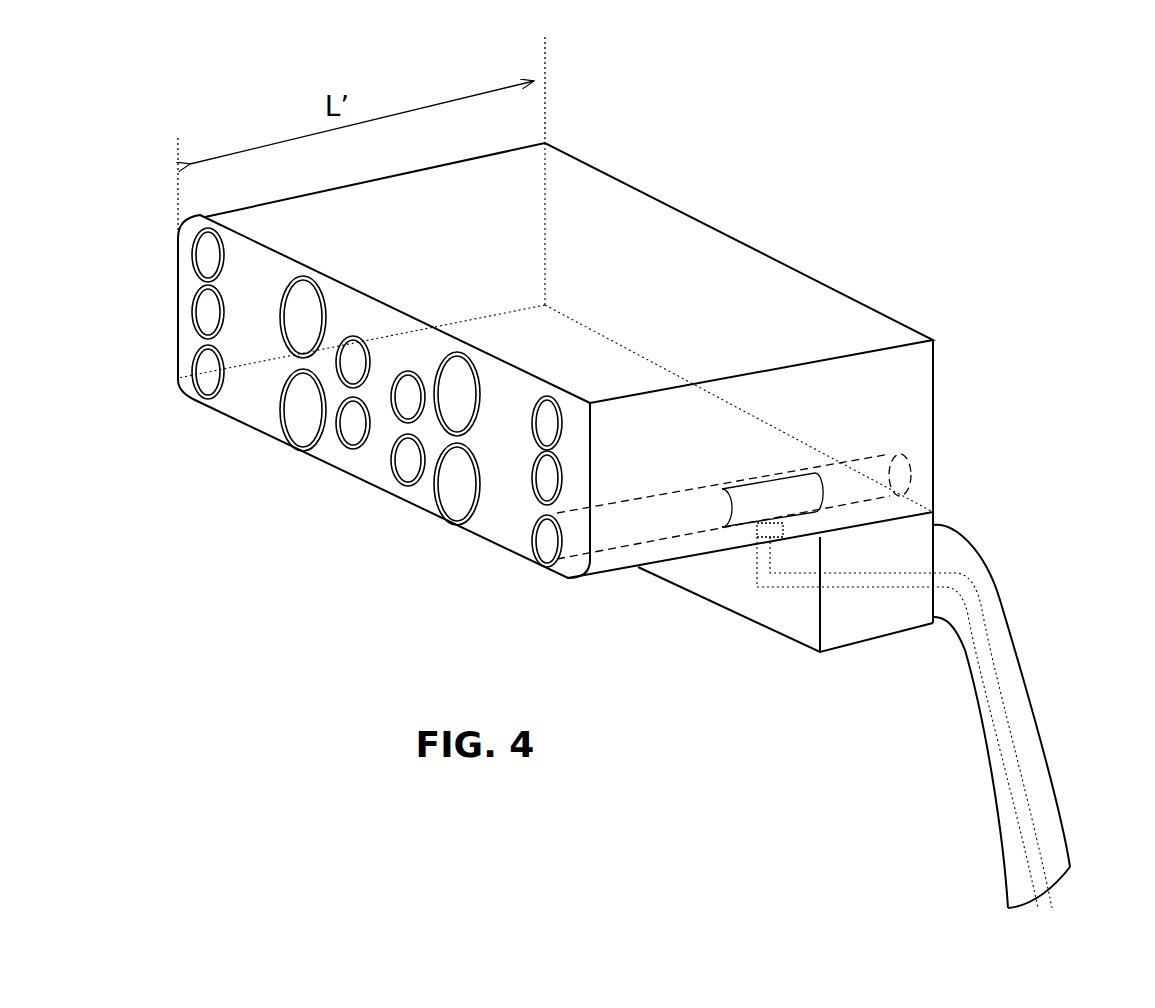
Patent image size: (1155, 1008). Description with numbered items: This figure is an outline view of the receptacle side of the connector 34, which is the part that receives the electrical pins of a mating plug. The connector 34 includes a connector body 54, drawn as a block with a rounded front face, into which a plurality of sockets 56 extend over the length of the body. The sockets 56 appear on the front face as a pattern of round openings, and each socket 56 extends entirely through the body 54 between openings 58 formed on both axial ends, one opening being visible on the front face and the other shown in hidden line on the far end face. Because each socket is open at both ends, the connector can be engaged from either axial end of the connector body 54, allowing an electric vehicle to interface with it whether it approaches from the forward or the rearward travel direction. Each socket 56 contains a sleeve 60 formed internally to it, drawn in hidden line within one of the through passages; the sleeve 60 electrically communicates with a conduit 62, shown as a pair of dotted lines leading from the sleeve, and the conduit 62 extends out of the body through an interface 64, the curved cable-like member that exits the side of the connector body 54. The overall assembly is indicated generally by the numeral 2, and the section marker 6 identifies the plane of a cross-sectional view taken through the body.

The device 2 is at (574, 329).
The section line 6- 6 is at (455, 50).
The connector 34 is at (555, 329).
The connector body 54 is at (620, 237).
The sockets 56 is at (300, 412).
The openings 58 is at (913, 460).
The sleeve 60 is at (747, 477).
The conduit 62 is at (797, 577).
The interface 64 is at (1013, 675).